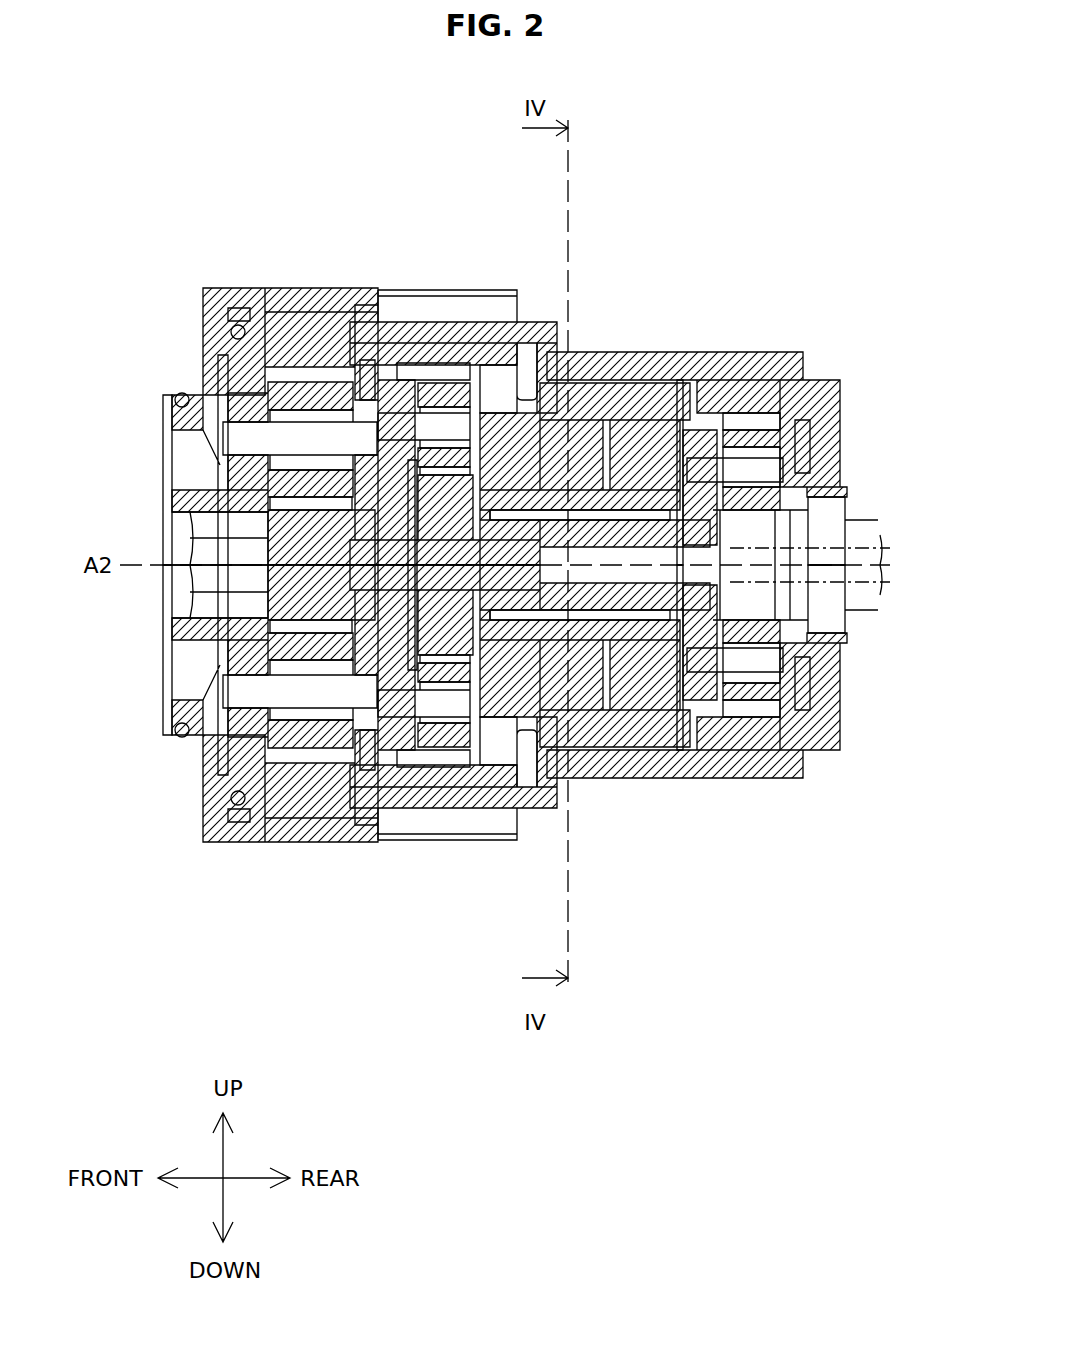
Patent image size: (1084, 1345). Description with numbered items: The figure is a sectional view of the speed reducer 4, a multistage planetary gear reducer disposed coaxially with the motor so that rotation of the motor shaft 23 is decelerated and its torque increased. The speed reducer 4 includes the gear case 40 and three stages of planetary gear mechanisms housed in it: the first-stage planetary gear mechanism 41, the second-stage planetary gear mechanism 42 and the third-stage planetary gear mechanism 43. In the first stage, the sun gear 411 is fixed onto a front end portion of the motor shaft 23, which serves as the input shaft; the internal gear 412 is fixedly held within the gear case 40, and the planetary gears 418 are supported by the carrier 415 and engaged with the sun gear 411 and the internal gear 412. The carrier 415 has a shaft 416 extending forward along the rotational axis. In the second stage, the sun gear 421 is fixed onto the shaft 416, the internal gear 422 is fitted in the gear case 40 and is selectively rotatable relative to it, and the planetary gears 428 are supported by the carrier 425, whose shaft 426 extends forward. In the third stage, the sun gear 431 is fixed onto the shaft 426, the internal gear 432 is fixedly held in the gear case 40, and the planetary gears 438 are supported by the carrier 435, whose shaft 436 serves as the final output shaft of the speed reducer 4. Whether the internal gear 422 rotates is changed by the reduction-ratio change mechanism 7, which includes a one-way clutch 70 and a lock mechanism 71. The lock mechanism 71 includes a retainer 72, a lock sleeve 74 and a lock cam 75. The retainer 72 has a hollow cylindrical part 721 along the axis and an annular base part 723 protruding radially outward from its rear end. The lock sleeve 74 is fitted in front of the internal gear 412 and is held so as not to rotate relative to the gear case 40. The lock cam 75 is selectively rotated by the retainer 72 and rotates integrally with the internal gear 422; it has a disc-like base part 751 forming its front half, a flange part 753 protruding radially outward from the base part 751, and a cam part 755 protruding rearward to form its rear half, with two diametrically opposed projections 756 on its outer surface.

The speed reducer 4 is at (762, 190).
The gear case 40 is at (345, 300).
The planetary gears 438 is at (307, 377).
The third-stage planetary gear mechanism 43 is at (287, 300).
The second-stage planetary gear mechanism 42 is at (427, 340).
The planetary gears 428 is at (447, 373).
The internal gear 422 is at (457, 353).
The lock cam 75 is at (527, 362).
The base part 751 is at (560, 437).
The lock sleeve 74 is at (623, 397).
The retainer 72 is at (647, 413).
The lock mechanism 71 is at (697, 363).
The reduction-ratio change mechanism 7 is at (713, 393).
The first-stage planetary gear mechanism 41 is at (787, 370).
The planetary gears 418 is at (817, 373).
The one-way clutch 70 is at (695, 470).
The sun gear 411 is at (810, 510).
The motor shaft 23 is at (835, 580).
The carrier 435 is at (215, 463).
The shaft 426 is at (302, 548).
The shaft 436 is at (202, 633).
The sun gear 431 is at (300, 610).
The internal gear 432 is at (310, 820).
The carrier 425 is at (383, 753).
The sun gear 421 is at (442, 643).
The flange part 753 is at (497, 780).
The shaft 416 is at (515, 643).
The cam part 755 is at (558, 637).
The projections 756 is at (565, 418).
The cylindrical part 721 is at (650, 713).
The base part 723 is at (700, 725).
The carrier 415 is at (707, 703).
The internal gear 412 is at (770, 725).